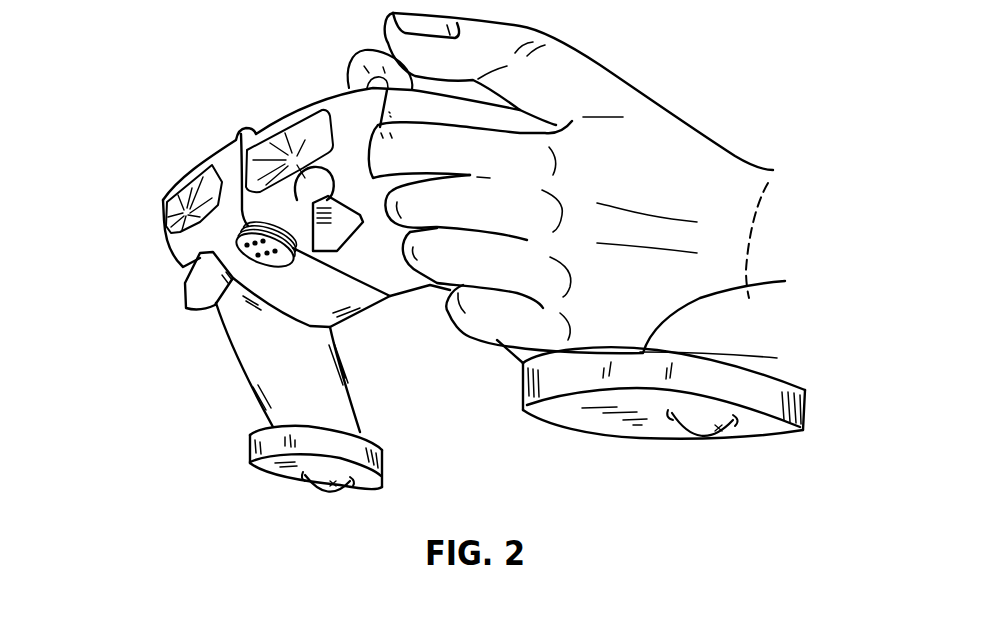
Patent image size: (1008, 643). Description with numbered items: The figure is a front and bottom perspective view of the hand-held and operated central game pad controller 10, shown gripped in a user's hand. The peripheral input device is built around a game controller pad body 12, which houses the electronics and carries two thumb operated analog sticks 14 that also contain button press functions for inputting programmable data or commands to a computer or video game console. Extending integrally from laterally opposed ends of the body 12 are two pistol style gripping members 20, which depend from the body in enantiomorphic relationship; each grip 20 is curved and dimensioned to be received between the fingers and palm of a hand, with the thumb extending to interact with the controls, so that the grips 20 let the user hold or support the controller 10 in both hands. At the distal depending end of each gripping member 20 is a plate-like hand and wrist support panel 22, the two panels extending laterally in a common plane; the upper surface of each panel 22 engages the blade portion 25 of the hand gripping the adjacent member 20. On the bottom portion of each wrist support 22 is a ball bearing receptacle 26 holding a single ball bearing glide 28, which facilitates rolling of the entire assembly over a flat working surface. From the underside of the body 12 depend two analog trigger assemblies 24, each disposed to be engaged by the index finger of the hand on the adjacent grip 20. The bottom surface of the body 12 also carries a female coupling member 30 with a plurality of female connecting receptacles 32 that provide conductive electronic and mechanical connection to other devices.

The central game pad controller 10 is at (130, 131).
The game controller pad body 12 is at (210, 157).
The thumb operated analog sticks 14 is at (247, 127).
The pistol style gripping members 20 is at (253, 370).
The hand and wrist support panels 22 is at (250, 452).
The analog trigger assemblies 24 is at (183, 307).
The blade portion 25 is at (760, 287).
The ball bearing receptacle 26 is at (303, 478).
The ball bearing glide 28 is at (335, 490).
The female coupling member 30 is at (233, 235).
The female connecting receptacles 32 is at (235, 252).